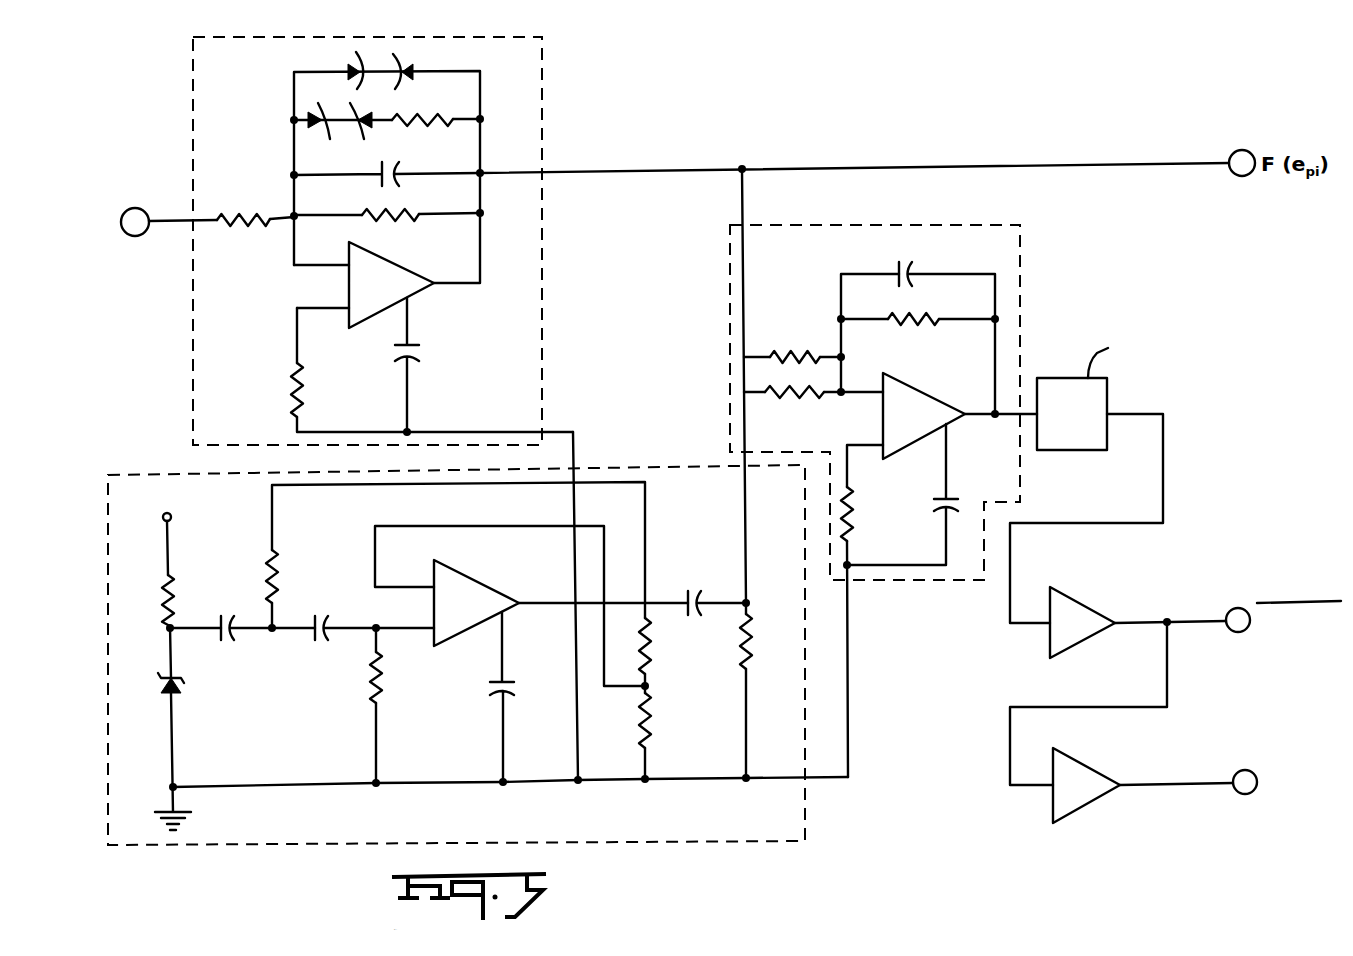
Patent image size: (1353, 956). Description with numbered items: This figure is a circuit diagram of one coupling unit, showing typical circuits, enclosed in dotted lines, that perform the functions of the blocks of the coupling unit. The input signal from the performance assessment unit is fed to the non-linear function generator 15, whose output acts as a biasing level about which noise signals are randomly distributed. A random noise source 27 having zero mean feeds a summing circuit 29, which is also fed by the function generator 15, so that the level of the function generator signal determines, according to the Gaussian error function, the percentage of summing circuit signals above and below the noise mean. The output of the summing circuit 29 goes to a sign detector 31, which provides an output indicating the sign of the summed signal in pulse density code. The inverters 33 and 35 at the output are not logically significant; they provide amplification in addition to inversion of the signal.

The non-linear function generator 15 is at (193, 345).
The random noise source 27 is at (113, 473).
The summing circuit 29 is at (728, 273).
The sign detector 31 is at (1107, 400).
The inverter 33 is at (1080, 598).
The inverter 35 is at (1085, 760).